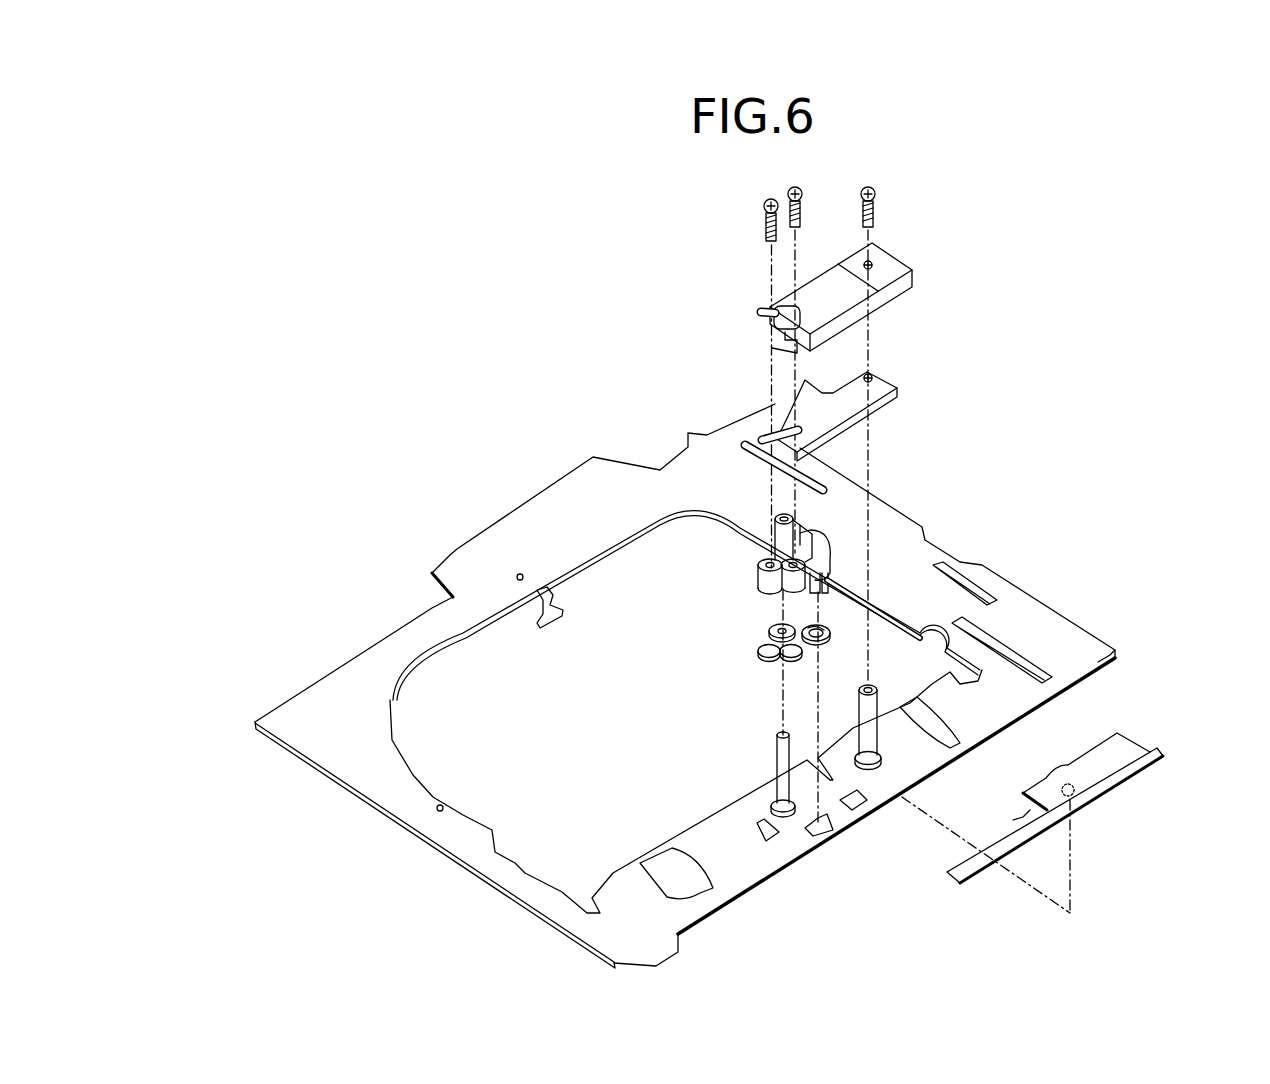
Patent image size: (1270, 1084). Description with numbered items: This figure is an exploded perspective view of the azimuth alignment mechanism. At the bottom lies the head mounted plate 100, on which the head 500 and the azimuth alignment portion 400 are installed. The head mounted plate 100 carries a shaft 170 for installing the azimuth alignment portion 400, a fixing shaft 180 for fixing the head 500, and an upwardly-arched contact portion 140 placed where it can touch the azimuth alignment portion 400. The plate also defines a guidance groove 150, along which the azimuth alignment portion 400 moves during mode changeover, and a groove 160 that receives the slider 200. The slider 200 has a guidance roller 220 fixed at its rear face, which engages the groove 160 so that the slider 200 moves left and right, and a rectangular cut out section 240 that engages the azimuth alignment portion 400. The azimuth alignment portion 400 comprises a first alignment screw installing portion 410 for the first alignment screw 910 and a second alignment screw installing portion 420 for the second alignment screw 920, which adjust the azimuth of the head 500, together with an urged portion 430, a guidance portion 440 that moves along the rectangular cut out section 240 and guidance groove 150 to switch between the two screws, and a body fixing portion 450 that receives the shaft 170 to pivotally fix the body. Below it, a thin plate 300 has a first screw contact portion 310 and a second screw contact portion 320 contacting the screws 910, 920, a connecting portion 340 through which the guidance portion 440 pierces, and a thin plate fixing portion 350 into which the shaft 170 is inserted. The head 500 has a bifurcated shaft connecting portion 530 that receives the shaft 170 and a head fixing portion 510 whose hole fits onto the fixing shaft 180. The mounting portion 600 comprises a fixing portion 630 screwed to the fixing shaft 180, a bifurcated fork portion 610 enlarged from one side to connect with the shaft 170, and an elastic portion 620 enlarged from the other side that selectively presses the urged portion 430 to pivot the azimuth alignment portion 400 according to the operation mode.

The head mounted plate 100 is at (323, 740).
The contact portion 140 is at (757, 828).
The guidance groove 150 is at (833, 832).
The groove 160 is at (857, 802).
The shaft 170 is at (777, 762).
The fixing shaft 180 is at (872, 698).
The slider 200 is at (1155, 751).
The guidance roller 220 is at (1083, 792).
The rectangular cut out section 240 is at (1070, 820).
The thin plate 300 is at (768, 638).
The first screw contact portion 310 is at (759, 647).
The second screw contact portion 320 is at (787, 663).
The connecting portion 340 is at (822, 634).
The thin plate fixing portion 350 is at (833, 628).
The azimuth alignment portion 400 is at (802, 529).
The first alignment screw installing portion 410 is at (760, 583).
The second alignment screw installing portion 420 is at (765, 597).
The urged portion 430 is at (813, 530).
The guidance portion 440 is at (827, 582).
The body fixing portion 450 is at (790, 528).
The head 500 is at (806, 414).
The head fixing portion 510 is at (900, 384).
The shaft connecting portion 530 is at (760, 423).
The mounting portion 600 is at (806, 288).
The fork portion 610 is at (758, 312).
The elastic portion 620 is at (850, 324).
The fixing portion 630 is at (872, 258).
The first alignment screw 910 is at (764, 206).
The second alignment screw 920 is at (801, 192).